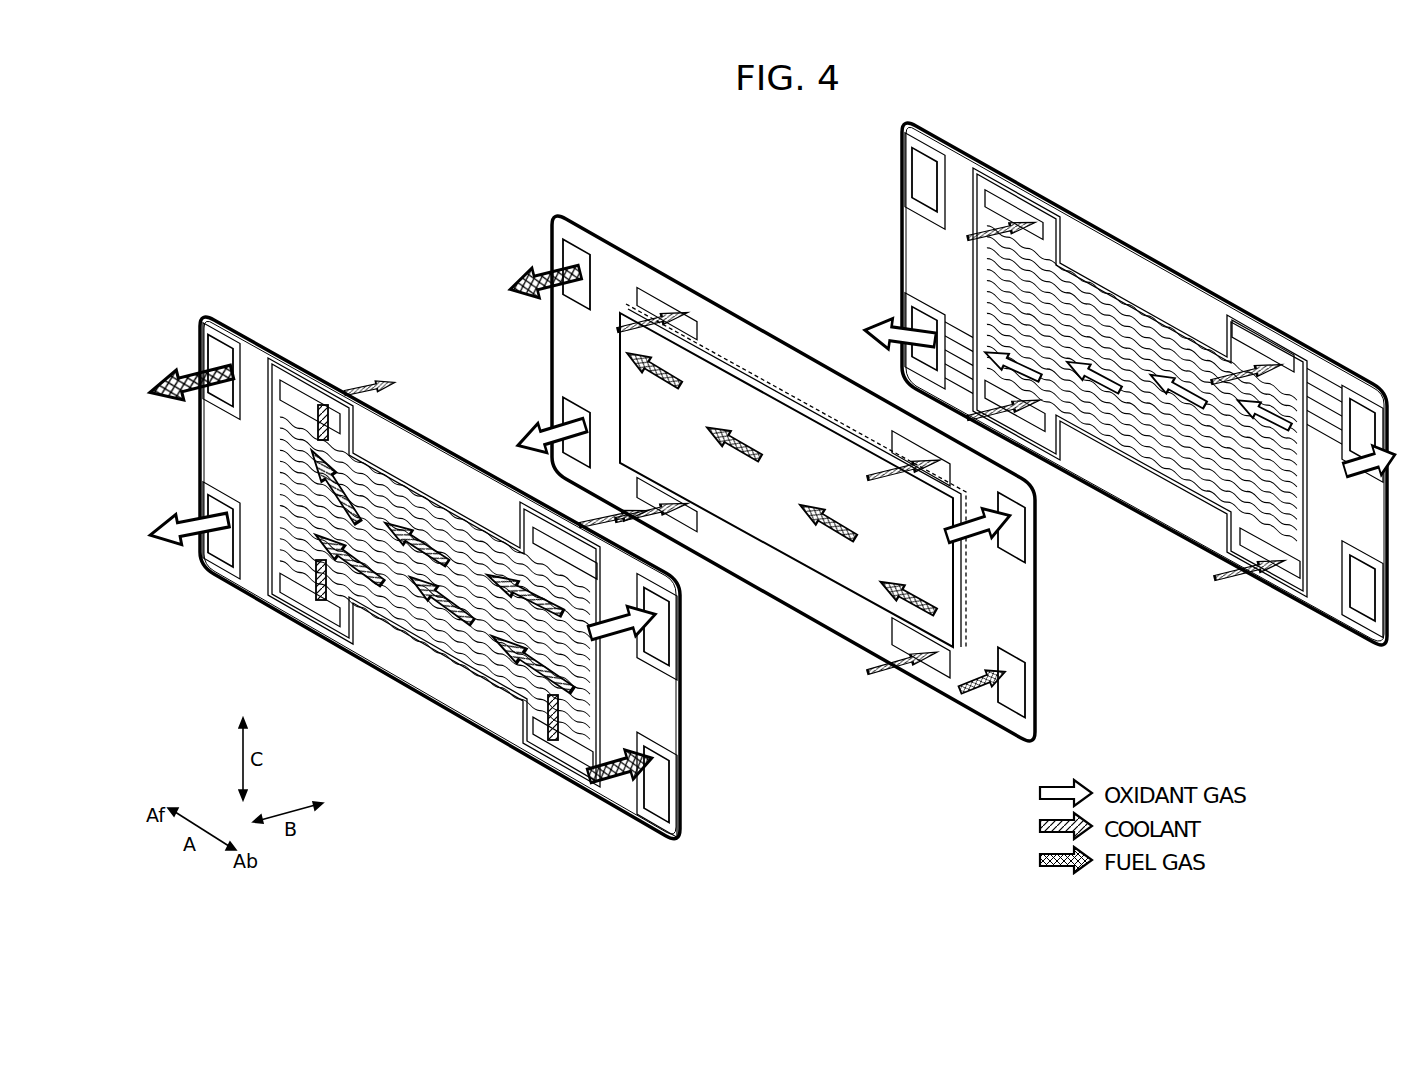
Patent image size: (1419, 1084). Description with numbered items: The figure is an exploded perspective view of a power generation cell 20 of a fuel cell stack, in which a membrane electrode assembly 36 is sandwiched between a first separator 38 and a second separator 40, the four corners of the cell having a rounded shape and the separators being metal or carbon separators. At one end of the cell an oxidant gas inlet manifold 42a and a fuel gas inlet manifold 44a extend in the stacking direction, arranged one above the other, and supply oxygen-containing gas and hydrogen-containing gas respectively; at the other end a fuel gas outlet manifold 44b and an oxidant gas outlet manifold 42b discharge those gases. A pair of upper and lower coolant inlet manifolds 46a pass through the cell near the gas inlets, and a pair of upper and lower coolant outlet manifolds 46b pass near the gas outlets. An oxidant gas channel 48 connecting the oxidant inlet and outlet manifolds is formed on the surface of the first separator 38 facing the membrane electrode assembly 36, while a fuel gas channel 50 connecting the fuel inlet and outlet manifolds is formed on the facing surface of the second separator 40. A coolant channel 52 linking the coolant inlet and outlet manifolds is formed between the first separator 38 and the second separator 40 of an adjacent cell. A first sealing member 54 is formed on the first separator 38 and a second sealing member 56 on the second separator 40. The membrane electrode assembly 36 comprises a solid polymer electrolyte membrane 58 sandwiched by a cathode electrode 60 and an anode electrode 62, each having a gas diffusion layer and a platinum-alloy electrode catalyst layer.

The power generation cell 20 is at (329, 237).
The membrane electrode assembly 36 is at (572, 212).
The first separator 38 is at (958, 142).
The second separator 40 is at (205, 312).
The oxidant gas inlet manifold 42a is at (652, 626).
The oxidant gas outlet manifold 42b is at (233, 580).
The fuel gas inlet manifold 44a is at (652, 793).
The fuel gas outlet manifold 44b is at (228, 362).
The coolant inlet manifold 46a is at (587, 560).
The coolant outlet manifold 46b is at (300, 395).
The oxidant gas channel 48 is at (1118, 405).
The fuel gas channel 50 is at (383, 492).
The coolant channel 52 is at (415, 605).
The first sealing member 54 is at (1088, 270).
The second sealing member 56 is at (293, 368).
The solid polymer electrolyte membrane 58 is at (1008, 722).
The cathode electrode 60 is at (750, 370).
The anode electrode 62 is at (840, 565).